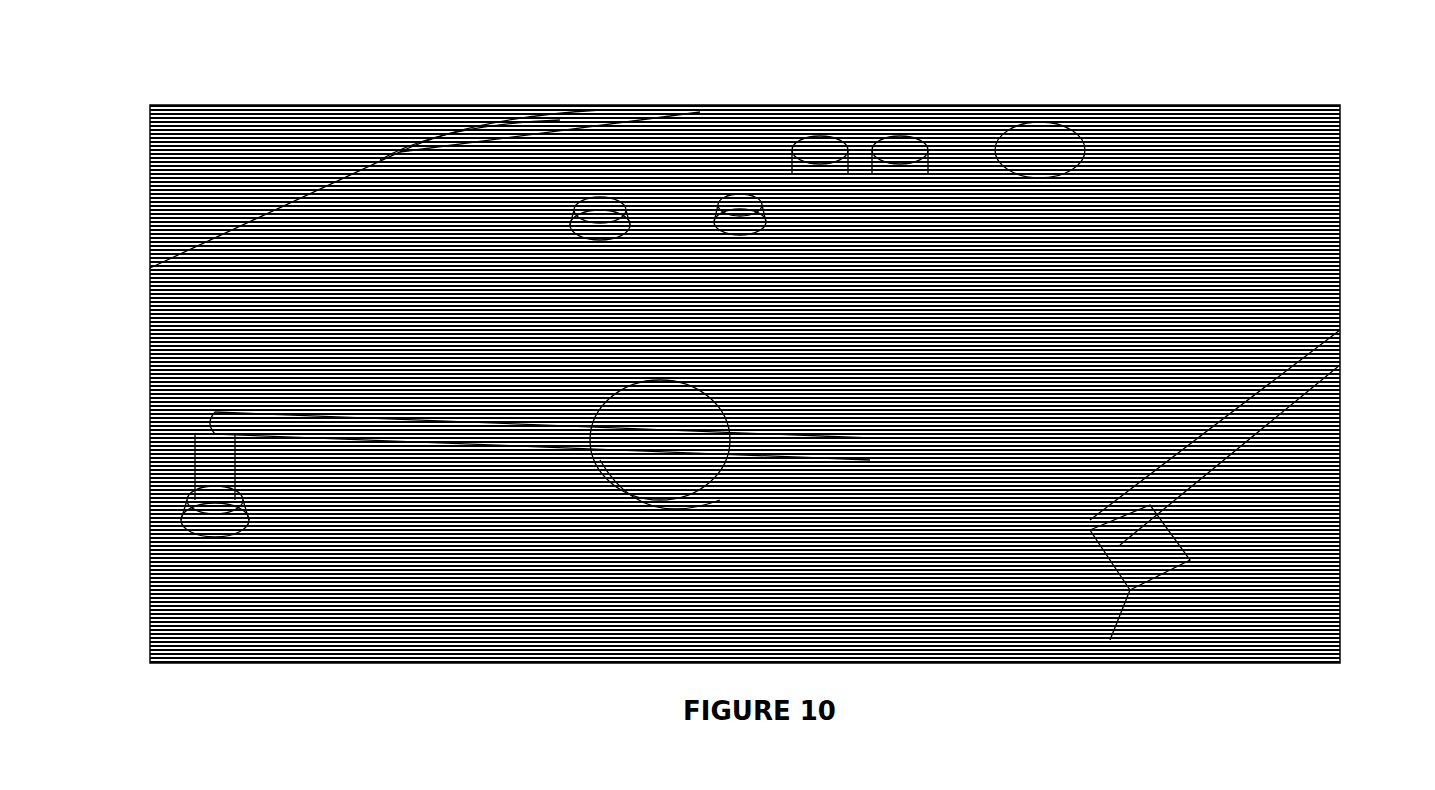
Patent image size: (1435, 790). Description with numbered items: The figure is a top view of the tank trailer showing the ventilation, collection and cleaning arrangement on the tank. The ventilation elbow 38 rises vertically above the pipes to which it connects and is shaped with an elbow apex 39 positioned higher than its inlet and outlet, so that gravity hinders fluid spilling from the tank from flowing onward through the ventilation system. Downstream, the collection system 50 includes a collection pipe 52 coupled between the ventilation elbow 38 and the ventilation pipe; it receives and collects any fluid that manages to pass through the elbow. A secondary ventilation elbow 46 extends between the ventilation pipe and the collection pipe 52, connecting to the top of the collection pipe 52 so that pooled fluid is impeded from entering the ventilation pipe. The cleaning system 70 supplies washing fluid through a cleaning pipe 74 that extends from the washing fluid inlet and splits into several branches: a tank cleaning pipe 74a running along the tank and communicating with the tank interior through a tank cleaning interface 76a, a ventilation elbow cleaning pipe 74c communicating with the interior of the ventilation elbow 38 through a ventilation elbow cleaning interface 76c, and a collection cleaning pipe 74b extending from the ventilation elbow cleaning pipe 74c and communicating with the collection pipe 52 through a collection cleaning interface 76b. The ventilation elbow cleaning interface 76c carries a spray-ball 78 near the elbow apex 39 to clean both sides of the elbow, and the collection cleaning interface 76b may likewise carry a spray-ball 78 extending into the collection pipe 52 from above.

The ventilation elbow 38 is at (480, 235).
The elbow apex 39 is at (528, 105).
The spray-ball 78 is at (440, 105).
The ventilation elbow cleaning interface 76c is at (585, 105).
The ventilation elbow cleaning pipe 74c is at (725, 105).
The collection cleaning pipe 74b is at (797, 107).
The collection cleaning interface 76b is at (880, 107).
The secondary ventilation elbow 46 is at (1012, 107).
The tank cleaning pipe 74a is at (290, 415).
The tank cleaning interface 76a is at (190, 540).
The collection system 50 is at (600, 515).
The collection pipe 52 is at (630, 520).
The cleaning system 70 is at (1120, 640).
The cleaning pipe 74 is at (1250, 430).